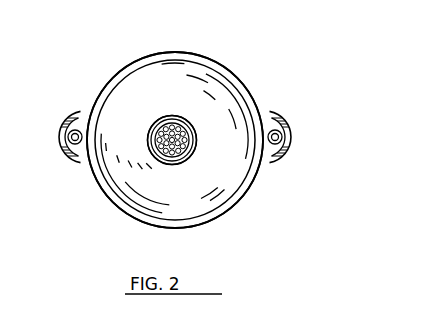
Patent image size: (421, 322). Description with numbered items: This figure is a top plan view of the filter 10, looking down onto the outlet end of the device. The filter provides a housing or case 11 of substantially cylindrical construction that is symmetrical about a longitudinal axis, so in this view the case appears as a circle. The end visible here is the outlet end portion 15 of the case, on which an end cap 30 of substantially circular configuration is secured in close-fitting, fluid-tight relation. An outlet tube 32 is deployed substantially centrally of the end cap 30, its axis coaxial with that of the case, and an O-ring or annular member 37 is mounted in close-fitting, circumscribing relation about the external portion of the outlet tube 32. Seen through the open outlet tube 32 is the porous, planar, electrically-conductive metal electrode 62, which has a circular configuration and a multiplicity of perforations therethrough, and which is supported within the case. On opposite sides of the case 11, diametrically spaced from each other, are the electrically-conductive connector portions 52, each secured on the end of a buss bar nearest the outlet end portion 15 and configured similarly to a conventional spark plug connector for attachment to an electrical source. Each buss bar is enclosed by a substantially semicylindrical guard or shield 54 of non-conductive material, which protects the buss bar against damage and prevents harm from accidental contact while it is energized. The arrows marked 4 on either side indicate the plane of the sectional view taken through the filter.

The filter 10 is at (242, 220).
The housing or case 11 is at (124, 63).
The outlet end portion 15 is at (173, 50).
The end cap 30 is at (208, 74).
The outlet tube 32 is at (158, 117).
The O-ring or annular member 37 is at (193, 156).
The metal electrode 62 is at (157, 134).
The connector portion 52 is at (73, 157).
The guard or shield 54 is at (69, 113).
The section line 4- 4 is at (50, 137).